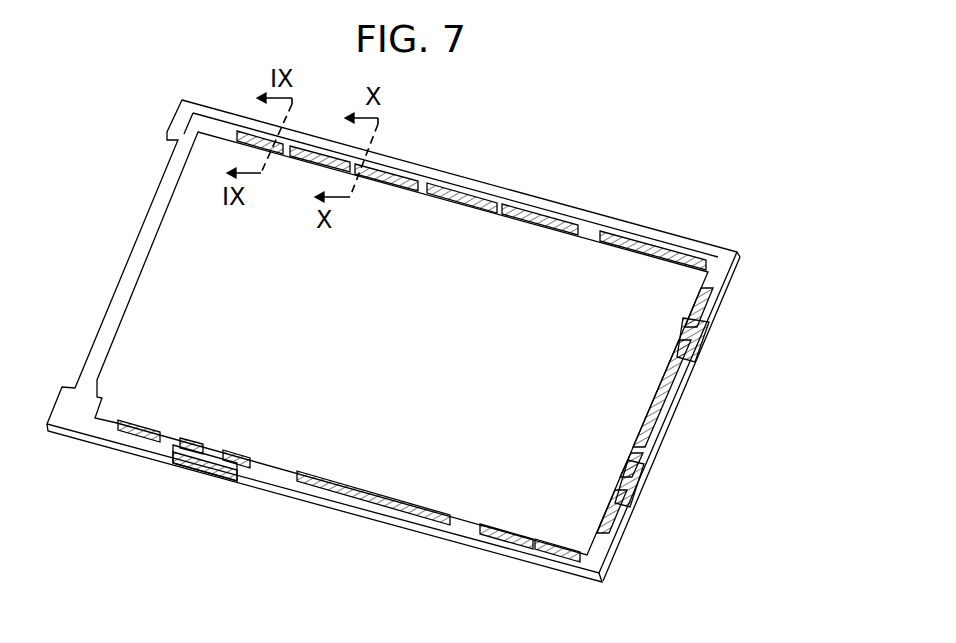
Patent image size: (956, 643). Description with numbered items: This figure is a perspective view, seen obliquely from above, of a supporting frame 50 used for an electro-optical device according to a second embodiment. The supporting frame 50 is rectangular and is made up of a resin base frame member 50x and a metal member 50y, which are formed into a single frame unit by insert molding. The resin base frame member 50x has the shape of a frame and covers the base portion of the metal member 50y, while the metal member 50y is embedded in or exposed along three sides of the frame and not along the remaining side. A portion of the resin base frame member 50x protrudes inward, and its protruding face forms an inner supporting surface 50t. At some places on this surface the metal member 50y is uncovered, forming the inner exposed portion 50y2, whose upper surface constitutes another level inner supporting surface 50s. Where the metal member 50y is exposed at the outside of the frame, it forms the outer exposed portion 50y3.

The supporting frame 50 is at (670, 96).
The resin base frame member 50x is at (374, 518).
The inner supporting surface 50t is at (415, 176).
The another level inner supporting surface 50s is at (497, 198).
The inner exposed portion 50y2 is at (638, 257).
The outer exposed portion 50y3 is at (700, 342).
The metal member 50y is at (418, 500).